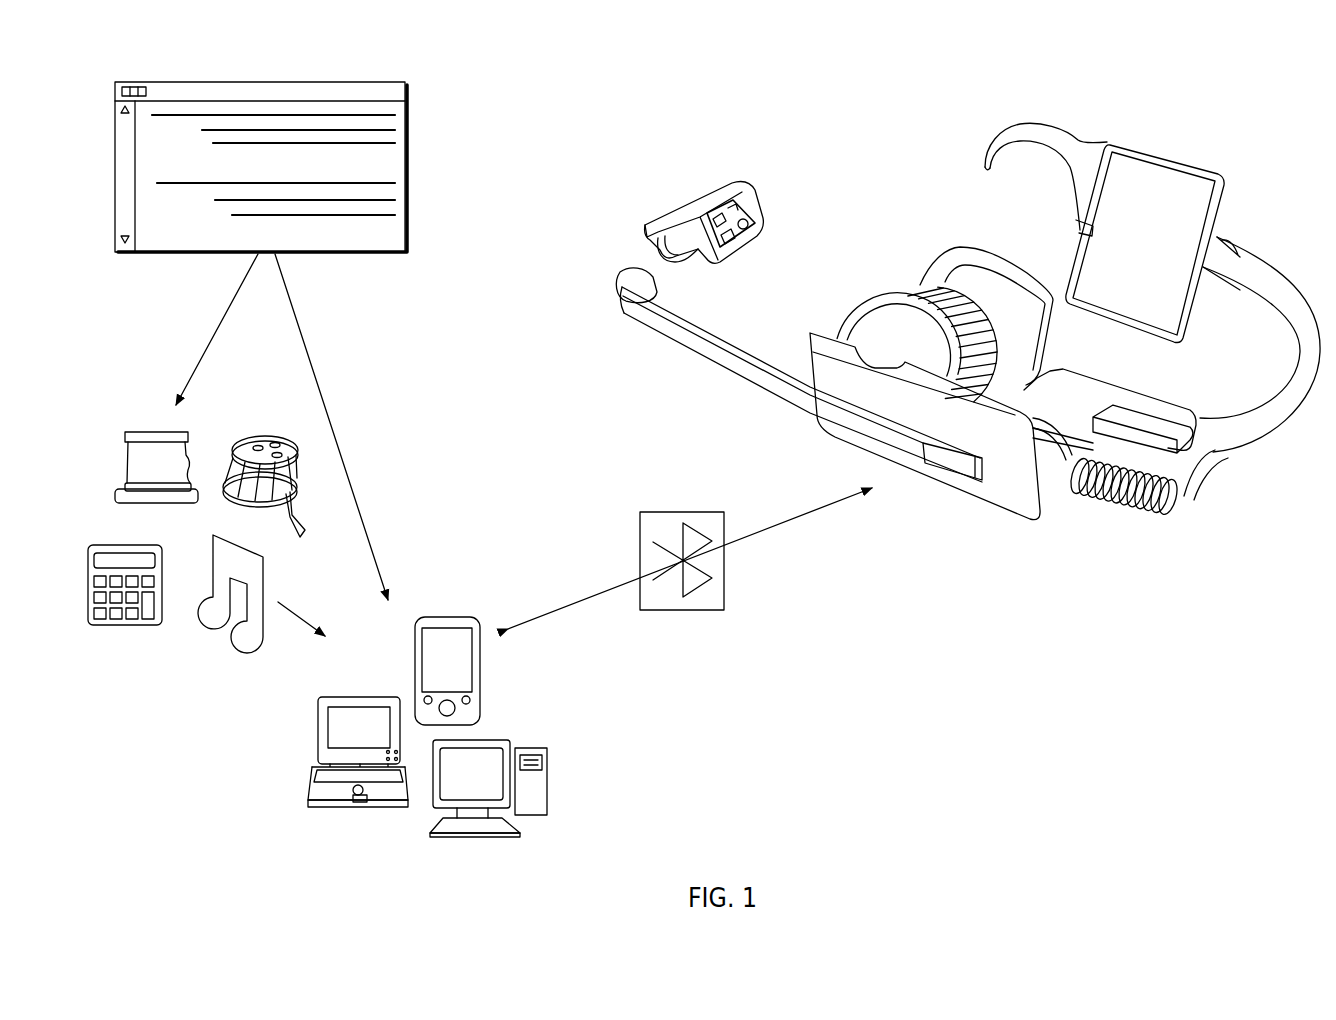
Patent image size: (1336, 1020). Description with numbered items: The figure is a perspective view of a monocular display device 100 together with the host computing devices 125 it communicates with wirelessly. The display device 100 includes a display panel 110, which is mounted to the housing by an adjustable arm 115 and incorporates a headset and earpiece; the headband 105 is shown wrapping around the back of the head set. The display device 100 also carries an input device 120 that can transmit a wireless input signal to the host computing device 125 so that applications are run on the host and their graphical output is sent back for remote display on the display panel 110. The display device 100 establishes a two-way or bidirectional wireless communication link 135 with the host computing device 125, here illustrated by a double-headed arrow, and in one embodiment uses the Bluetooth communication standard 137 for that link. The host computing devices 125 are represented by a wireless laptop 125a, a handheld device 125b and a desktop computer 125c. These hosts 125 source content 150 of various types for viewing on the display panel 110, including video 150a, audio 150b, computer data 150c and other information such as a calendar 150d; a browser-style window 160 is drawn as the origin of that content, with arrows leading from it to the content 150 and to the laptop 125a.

The display device 100 is at (797, 120).
The headband 105 is at (1243, 437).
The display panel 110 is at (680, 197).
The adjustable arm 115 is at (737, 367).
The input device 120 is at (944, 478).
The host computing device 125 is at (411, 735).
The wireless laptop 125a is at (335, 697).
The portable media player 125b is at (482, 700).
The desktop computer 125c is at (547, 793).
The wireless communication link 135 is at (758, 532).
The Bluetooth communication standard 137 is at (660, 512).
The content 150 is at (181, 529).
The video 150a is at (270, 440).
The audio 150b is at (242, 650).
The computer data 150c is at (115, 625).
The calendar 150d is at (128, 462).
The web browser window 160 is at (229, 82).